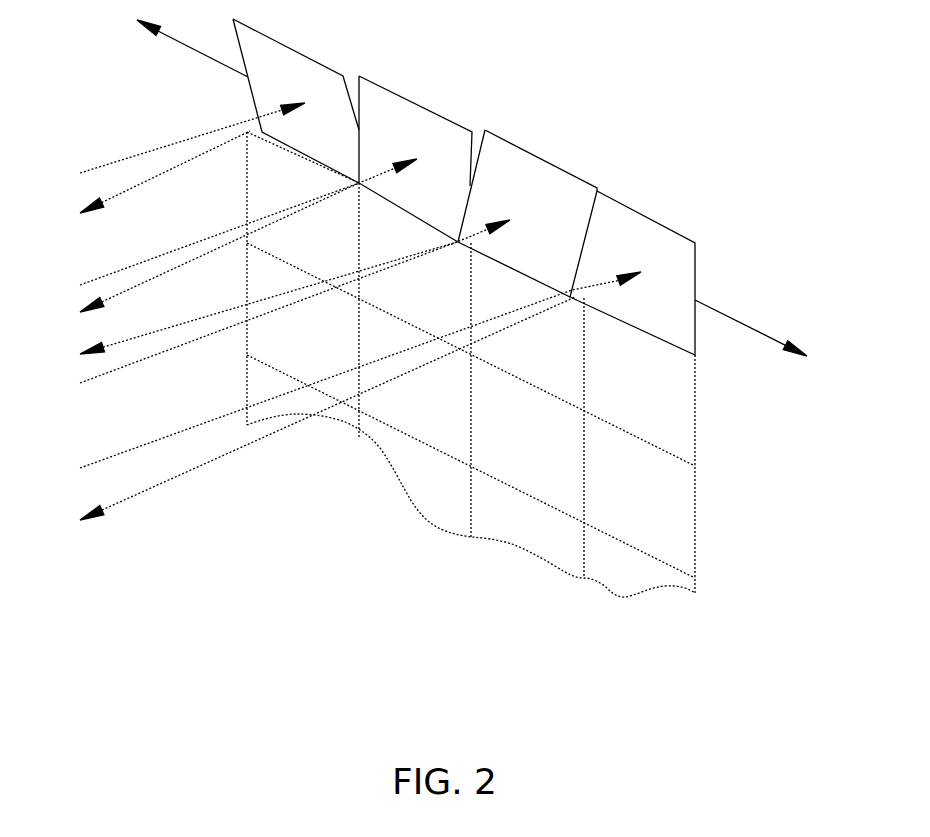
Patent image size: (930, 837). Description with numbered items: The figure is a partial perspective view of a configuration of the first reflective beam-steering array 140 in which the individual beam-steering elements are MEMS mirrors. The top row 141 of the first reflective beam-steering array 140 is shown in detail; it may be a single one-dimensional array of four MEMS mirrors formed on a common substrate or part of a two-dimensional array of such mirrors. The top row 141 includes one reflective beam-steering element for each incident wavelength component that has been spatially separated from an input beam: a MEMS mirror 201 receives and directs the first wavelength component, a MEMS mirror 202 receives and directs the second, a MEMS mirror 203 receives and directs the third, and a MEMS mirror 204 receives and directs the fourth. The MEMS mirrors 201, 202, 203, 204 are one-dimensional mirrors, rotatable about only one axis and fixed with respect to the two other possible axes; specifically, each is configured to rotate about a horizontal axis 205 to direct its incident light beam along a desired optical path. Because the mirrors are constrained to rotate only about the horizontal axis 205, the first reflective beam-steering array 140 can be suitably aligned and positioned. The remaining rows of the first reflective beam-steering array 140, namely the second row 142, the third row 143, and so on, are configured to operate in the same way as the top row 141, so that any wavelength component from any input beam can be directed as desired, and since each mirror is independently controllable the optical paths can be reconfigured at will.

The first reflective beam-steering array 140 is at (488, 187).
The top row 141 is at (708, 327).
The second row 142 is at (708, 410).
The third row 143 is at (717, 536).
The MEMS mirror 201 is at (291, 46).
The MEMS mirror 202 is at (415, 102).
The MEMS mirror 203 is at (540, 157).
The MEMS mirror 204 is at (638, 212).
The horizontal axis 205 is at (162, 38).